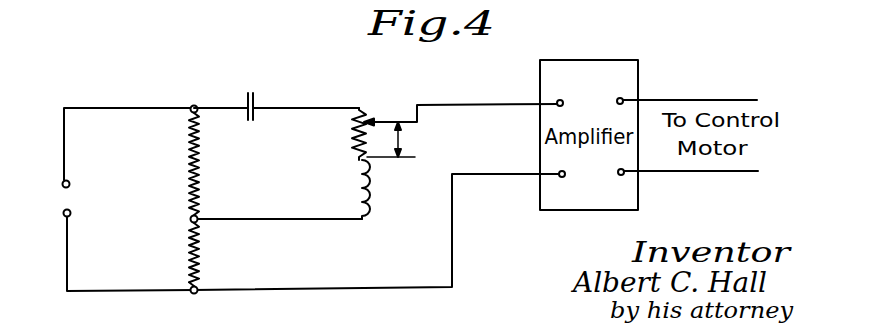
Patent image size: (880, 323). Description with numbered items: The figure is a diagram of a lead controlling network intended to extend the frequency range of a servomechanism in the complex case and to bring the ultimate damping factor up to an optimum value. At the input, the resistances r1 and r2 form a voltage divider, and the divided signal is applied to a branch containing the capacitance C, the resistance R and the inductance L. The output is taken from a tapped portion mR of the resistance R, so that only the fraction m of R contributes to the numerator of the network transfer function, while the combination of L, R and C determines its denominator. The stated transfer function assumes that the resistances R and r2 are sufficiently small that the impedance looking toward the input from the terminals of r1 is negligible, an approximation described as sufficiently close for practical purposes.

The capacitance C is at (252, 91).
The resistance r1 is at (183, 146).
The resistance r2 is at (179, 254).
The resistance R is at (350, 138).
The tapped portion mR of resistance R mR is at (391, 139).
The inductance L is at (376, 189).